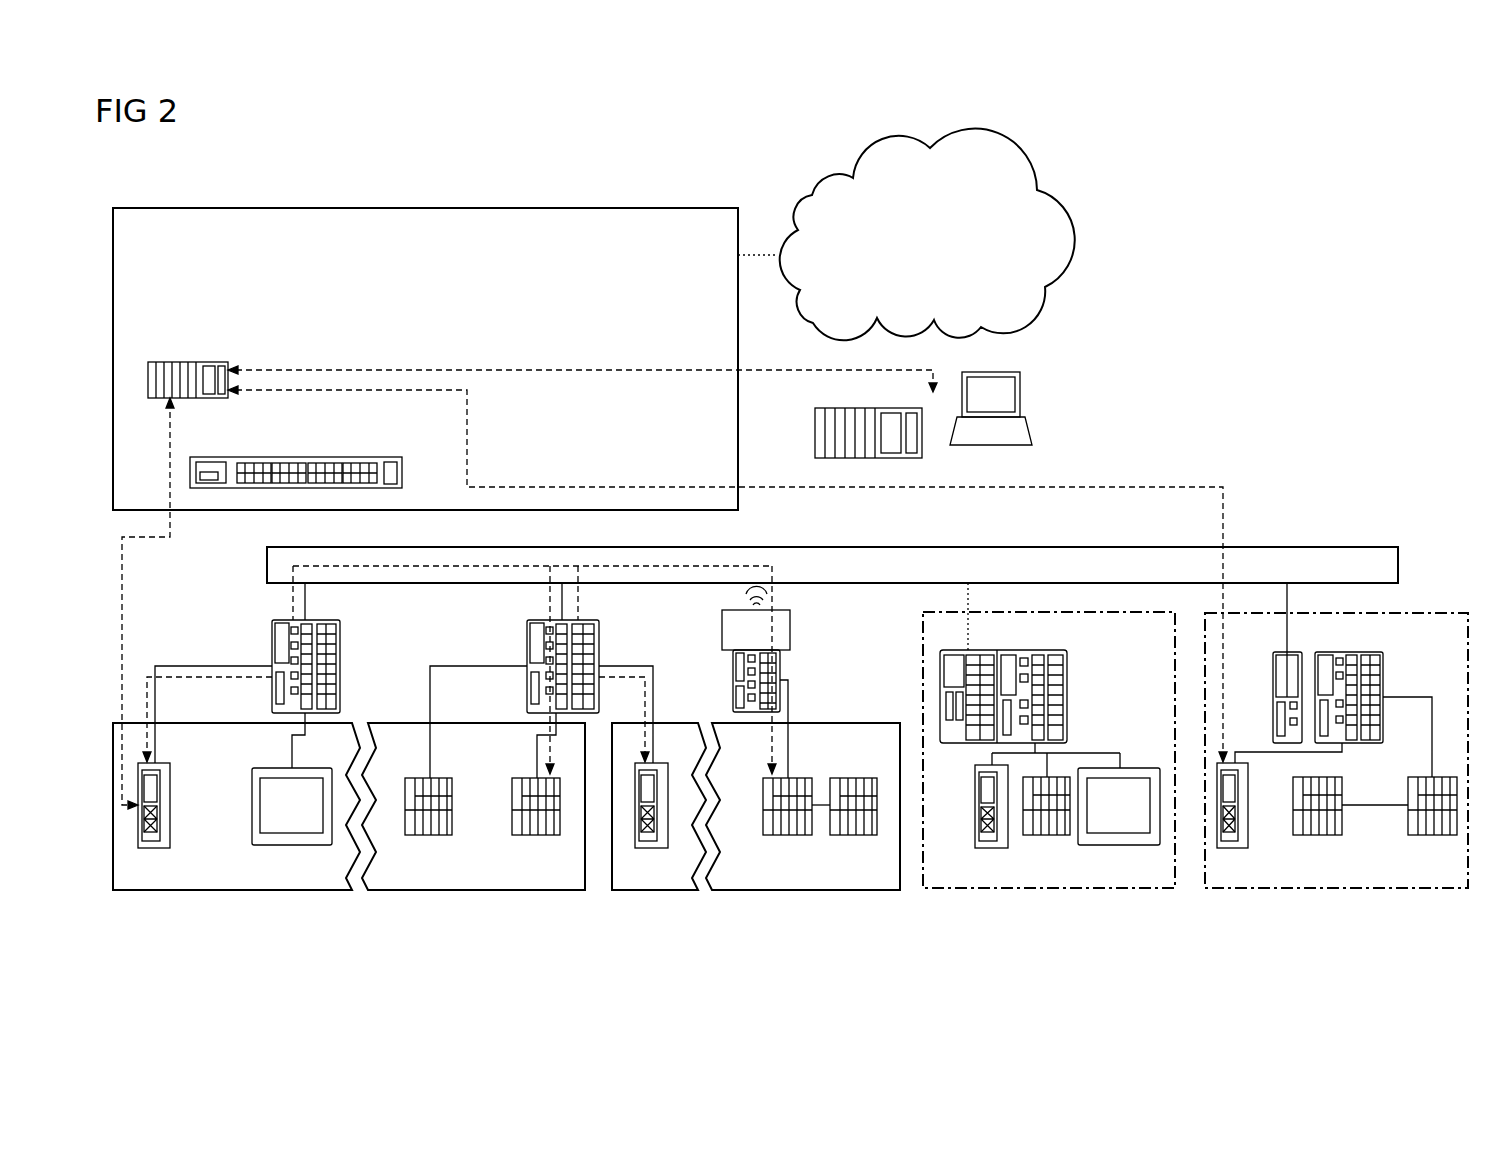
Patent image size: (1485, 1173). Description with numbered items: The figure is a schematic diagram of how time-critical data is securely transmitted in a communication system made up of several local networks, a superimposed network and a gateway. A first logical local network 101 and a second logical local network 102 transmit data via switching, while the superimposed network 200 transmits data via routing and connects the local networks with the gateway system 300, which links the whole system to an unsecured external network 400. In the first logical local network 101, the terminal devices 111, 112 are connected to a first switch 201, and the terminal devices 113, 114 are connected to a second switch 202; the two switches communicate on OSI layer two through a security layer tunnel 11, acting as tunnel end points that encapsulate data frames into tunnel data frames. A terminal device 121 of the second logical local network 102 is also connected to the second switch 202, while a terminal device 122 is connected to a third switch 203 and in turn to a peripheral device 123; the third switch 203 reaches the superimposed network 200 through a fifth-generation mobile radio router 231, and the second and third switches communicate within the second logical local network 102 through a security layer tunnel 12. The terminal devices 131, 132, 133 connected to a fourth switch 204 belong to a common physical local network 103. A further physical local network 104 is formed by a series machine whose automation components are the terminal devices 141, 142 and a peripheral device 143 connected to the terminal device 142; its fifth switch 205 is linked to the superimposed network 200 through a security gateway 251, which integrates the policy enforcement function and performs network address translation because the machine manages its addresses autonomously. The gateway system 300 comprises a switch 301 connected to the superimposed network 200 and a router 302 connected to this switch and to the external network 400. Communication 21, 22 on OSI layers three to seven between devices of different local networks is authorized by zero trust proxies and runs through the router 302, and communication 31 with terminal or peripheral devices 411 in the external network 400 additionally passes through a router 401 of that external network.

The gateway system 300 is at (301, 207).
The switch 301 is at (298, 457).
The router 302 is at (182, 362).
The communication 31 is at (590, 368).
The communication 22 is at (590, 485).
The communication 21 is at (122, 598).
The unsecured external network 400 is at (912, 285).
The router 401 is at (815, 438).
The terminal devices or peripheral devices 411 is at (1020, 395).
The superimposed network 200 is at (1312, 545).
The security layer tunnel 11 is at (293, 600).
The security layer tunnel 12 is at (578, 600).
The first switch 201 is at (272, 632).
The second switch 202 is at (527, 632).
The 5G mobile radio router 231 is at (790, 628).
The third switch 203 is at (780, 668).
The fourth switch 204 is at (1067, 735).
The security gateway 251 is at (1292, 648).
The fifth switch 205 is at (1383, 670).
The first logical local network 101 is at (220, 890).
The terminal device 111 is at (157, 848).
The terminal device 112 is at (292, 845).
The terminal device 113 is at (432, 835).
The terminal device 114 is at (540, 835).
The second logical local network 102 is at (728, 890).
The terminal device 121 is at (652, 848).
The terminal device 122 is at (783, 835).
The peripheral device 123 is at (866, 835).
The physical local network 103 is at (940, 888).
The terminal device 131 is at (993, 848).
The terminal device 132 is at (1048, 835).
The terminal device 133 is at (1146, 845).
The physical local network 104 is at (1375, 888).
The terminal device 141 is at (1236, 848).
The terminal device 142 is at (1438, 835).
The peripheral device 143 is at (1305, 835).